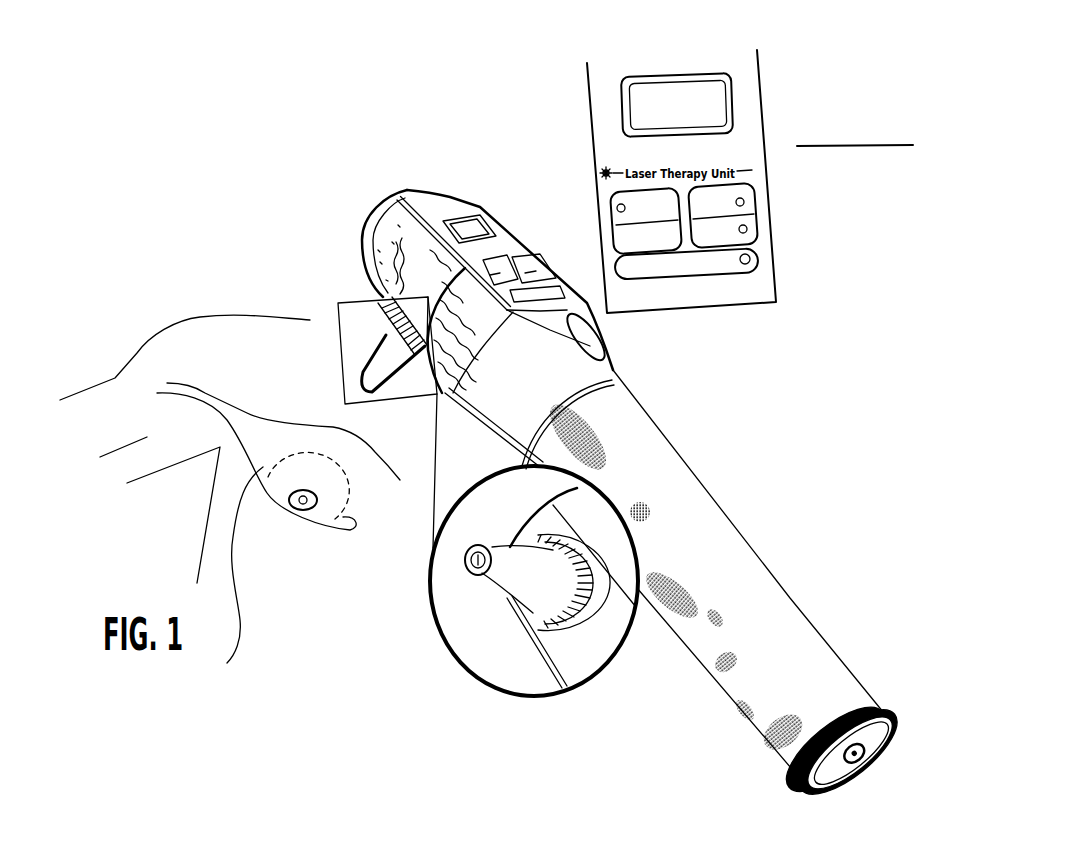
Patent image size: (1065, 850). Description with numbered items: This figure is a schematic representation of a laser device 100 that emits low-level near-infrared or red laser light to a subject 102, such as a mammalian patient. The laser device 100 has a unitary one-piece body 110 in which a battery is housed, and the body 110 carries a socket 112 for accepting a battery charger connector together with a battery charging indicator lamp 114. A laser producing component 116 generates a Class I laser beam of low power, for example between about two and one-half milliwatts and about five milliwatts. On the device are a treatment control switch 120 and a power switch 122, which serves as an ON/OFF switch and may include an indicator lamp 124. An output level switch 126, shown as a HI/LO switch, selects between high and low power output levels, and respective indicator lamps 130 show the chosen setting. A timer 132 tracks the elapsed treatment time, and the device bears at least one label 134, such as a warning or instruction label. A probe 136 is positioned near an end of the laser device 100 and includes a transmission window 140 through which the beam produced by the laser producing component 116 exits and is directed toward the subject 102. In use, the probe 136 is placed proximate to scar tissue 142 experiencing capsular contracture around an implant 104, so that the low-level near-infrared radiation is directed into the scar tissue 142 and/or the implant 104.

The laser device 100 is at (342, 188).
The subject 102 is at (183, 348).
The implant 104 is at (343, 517).
The body 110 is at (735, 560).
The socket 112 is at (852, 757).
The battery charging indicator lamp 114 is at (553, 285).
The laser producing component 116 is at (322, 258).
The treatment control switch 120 is at (593, 345).
The power switch 122 is at (497, 268).
The indicator lamp 124 is at (505, 248).
The output level switch 126 is at (532, 268).
The indicator lamps 130 is at (755, 192).
The timer 132 is at (620, 118).
The label 134 is at (395, 233).
The probe 136 is at (380, 357).
The transmission window 140 is at (470, 566).
The scar tissue 142 is at (247, 582).